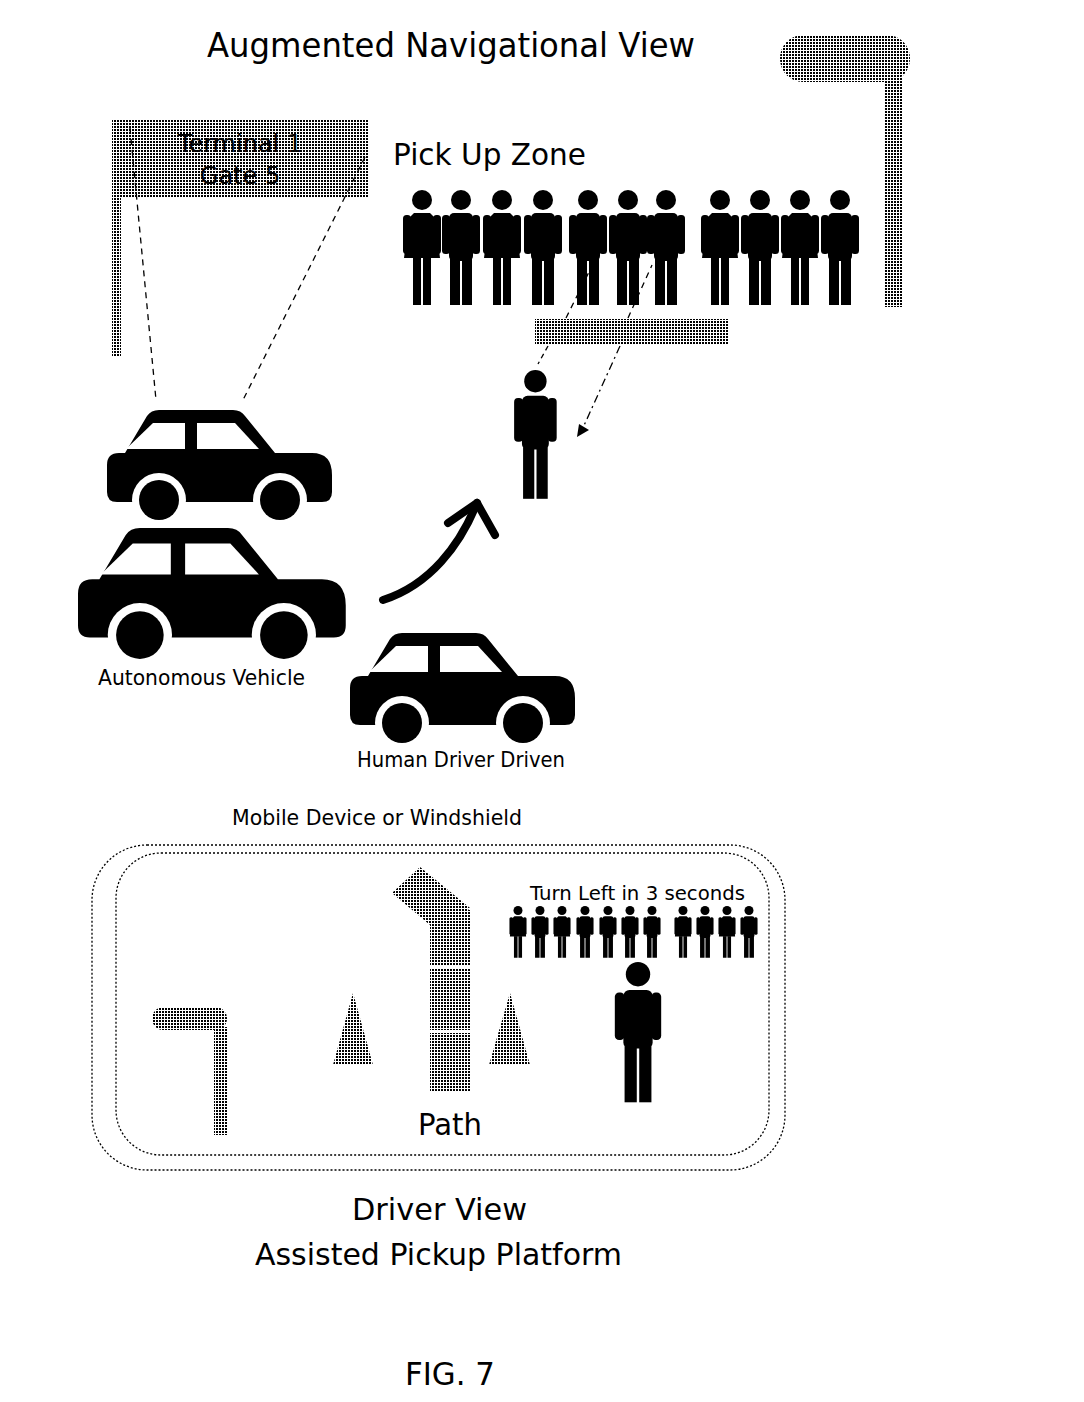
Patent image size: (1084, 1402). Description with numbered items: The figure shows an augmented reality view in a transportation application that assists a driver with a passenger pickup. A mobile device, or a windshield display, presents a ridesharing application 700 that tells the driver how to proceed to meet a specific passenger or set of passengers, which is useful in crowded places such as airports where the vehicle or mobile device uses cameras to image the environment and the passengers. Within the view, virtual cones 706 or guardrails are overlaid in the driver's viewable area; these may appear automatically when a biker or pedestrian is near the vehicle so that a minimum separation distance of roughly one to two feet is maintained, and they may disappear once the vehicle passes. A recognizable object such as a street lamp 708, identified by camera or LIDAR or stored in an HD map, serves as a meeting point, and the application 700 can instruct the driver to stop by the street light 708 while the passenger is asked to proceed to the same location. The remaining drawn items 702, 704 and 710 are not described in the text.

The ridesharing application 700 is at (583, 846).
The driving instruction text 702 is at (228, 890).
The pickup passenger indicator 704 is at (668, 1093).
The virtual cones 706 is at (508, 1030).
The street lamp 708 is at (850, 42).
The pick up here indicator 710 is at (720, 341).